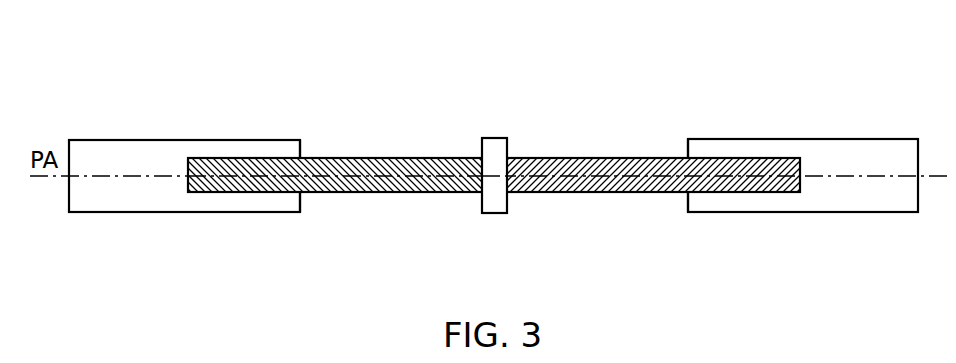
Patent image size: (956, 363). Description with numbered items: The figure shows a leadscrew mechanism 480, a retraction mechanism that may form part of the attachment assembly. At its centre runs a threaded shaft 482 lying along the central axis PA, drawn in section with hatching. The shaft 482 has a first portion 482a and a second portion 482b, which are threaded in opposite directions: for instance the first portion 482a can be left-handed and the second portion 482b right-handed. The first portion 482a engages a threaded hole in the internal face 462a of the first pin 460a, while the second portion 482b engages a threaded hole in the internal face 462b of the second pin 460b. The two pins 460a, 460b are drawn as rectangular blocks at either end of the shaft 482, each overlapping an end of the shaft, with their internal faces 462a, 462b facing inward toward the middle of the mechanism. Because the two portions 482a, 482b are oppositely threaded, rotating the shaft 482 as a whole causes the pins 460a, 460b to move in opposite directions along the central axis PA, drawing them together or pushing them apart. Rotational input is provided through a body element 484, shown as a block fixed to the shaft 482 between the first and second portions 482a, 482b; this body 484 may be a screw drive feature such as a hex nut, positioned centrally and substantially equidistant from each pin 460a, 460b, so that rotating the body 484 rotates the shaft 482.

The leadscrew mechanism 480 is at (472, 85).
The threaded shaft 482 is at (490, 188).
The first portion of the shaft 482a is at (552, 158).
The second portion of the shaft 482b is at (428, 158).
The body element 484 is at (497, 213).
The first pin 460a is at (847, 173).
The second pin 460b is at (150, 175).
The internal face of the first pin 462a is at (687, 152).
The internal face of the second pin 462b is at (302, 147).